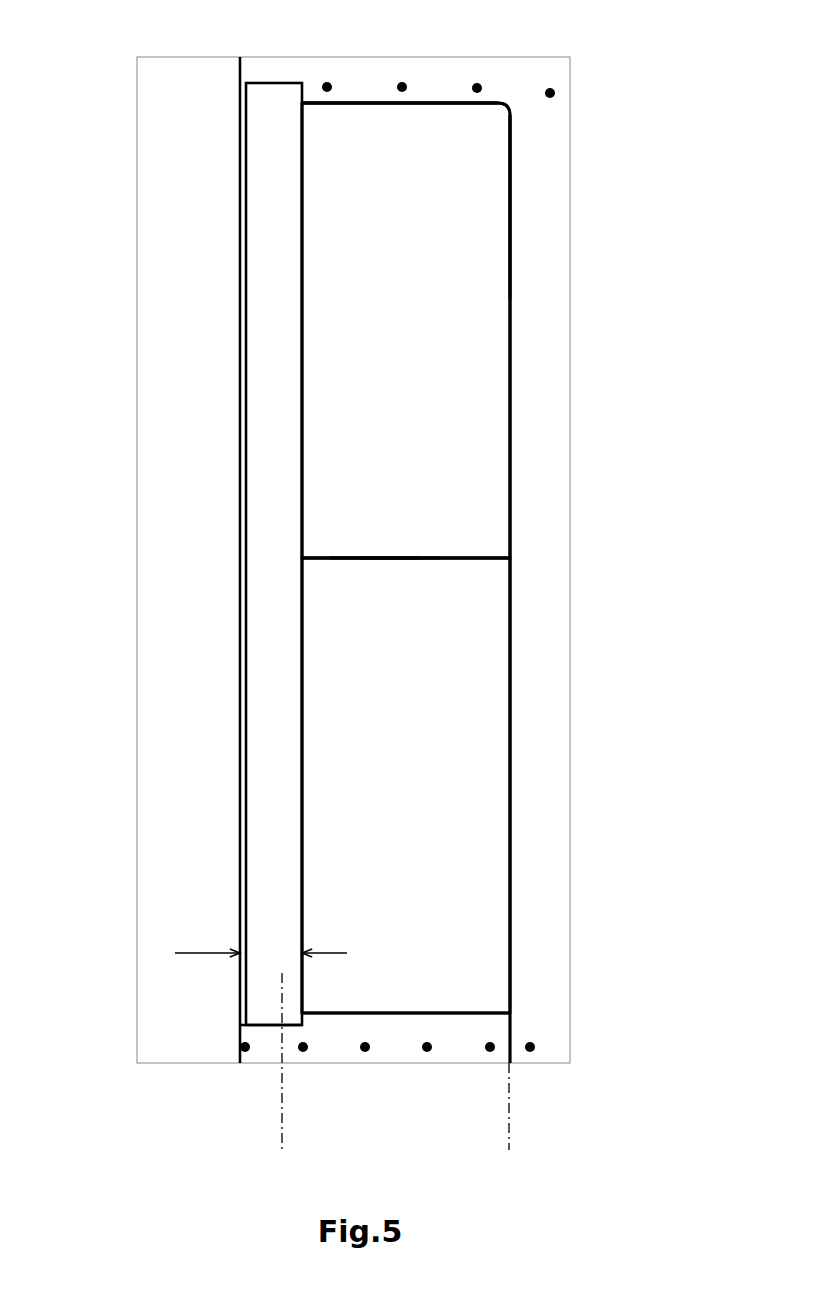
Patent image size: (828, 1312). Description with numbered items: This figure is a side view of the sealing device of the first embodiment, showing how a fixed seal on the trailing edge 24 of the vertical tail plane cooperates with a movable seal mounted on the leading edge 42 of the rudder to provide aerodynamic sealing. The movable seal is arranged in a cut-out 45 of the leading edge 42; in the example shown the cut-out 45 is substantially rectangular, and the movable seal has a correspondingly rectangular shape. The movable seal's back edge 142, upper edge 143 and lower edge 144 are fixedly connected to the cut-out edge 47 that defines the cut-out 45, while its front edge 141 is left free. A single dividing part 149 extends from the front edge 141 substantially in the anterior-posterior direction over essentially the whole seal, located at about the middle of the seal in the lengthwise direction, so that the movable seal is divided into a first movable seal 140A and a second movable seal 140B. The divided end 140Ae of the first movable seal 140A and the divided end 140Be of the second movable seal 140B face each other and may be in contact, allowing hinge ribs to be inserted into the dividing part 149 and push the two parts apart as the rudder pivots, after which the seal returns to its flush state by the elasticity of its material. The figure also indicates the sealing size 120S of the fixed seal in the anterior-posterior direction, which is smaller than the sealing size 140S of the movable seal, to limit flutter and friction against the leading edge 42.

The trailing edge 24 is at (167, 515).
The leading edge 42 is at (556, 273).
The cut-out 45 is at (323, 263).
The cut-out edge 47 is at (432, 108).
The sealing size 120S is at (267, 957).
The first movable seal 140A is at (460, 409).
The divided end 140Ae is at (373, 563).
The second movable seal 140B is at (462, 719).
The divided end 140Be is at (402, 555).
The sealing size 140S is at (508, 1137).
The front edge 141 is at (290, 435).
The back edge 142 is at (512, 438).
The upper edge 143 is at (371, 100).
The lower edge 144 is at (433, 1015).
The dividing part 149 is at (442, 555).